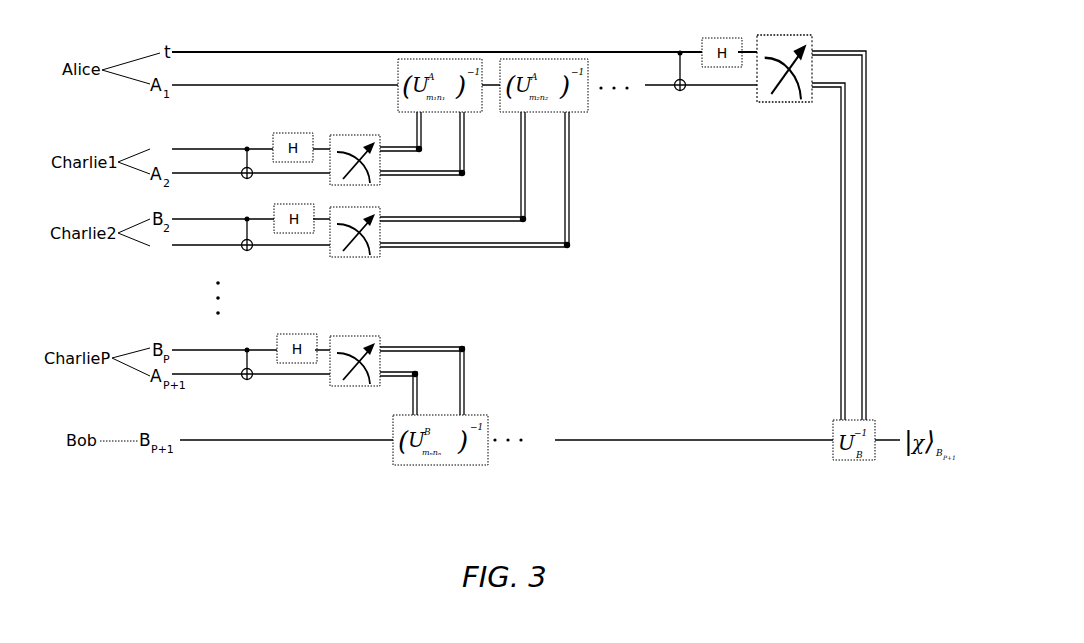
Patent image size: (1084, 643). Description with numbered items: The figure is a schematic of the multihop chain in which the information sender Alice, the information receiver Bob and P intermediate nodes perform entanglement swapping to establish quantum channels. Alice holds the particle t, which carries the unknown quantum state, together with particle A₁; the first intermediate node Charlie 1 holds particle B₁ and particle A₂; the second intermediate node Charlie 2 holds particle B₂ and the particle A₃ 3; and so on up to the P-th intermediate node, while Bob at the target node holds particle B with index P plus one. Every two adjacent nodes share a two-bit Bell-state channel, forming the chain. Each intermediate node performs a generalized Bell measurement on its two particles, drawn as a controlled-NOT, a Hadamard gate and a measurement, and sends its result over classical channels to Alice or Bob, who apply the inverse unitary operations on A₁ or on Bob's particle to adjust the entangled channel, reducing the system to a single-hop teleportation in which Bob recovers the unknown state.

The first intermediate node Charlie 1 is at (308, 148).
The second intermediate node Charlie 2 is at (360, 187).
The particle A₃ 3 is at (314, 332).